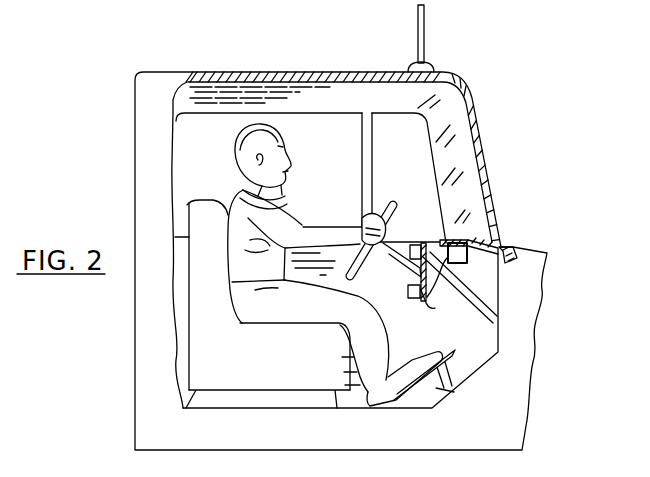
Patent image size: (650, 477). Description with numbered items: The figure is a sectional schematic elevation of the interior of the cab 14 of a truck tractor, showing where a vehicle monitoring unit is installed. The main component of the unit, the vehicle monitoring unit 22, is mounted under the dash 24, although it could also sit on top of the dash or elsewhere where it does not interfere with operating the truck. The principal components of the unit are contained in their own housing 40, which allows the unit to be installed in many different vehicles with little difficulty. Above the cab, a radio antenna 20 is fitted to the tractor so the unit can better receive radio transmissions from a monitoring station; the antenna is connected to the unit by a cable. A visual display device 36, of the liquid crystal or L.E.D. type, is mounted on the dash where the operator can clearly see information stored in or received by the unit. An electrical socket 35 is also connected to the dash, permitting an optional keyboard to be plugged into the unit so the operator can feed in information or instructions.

The cab 14 is at (432, 112).
The radio antenna 20 is at (425, 38).
The vehicle monitoring unit 22 is at (470, 242).
The dash 24 is at (450, 240).
The electrical socket 35 is at (414, 298).
The visual display device 36 is at (413, 244).
The housing 40 is at (462, 268).